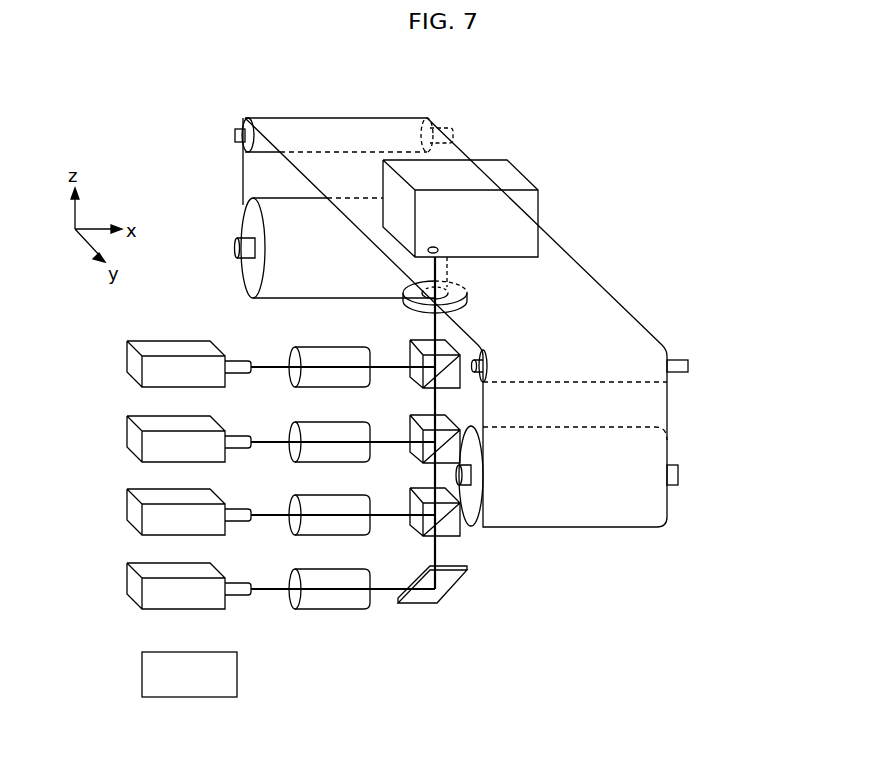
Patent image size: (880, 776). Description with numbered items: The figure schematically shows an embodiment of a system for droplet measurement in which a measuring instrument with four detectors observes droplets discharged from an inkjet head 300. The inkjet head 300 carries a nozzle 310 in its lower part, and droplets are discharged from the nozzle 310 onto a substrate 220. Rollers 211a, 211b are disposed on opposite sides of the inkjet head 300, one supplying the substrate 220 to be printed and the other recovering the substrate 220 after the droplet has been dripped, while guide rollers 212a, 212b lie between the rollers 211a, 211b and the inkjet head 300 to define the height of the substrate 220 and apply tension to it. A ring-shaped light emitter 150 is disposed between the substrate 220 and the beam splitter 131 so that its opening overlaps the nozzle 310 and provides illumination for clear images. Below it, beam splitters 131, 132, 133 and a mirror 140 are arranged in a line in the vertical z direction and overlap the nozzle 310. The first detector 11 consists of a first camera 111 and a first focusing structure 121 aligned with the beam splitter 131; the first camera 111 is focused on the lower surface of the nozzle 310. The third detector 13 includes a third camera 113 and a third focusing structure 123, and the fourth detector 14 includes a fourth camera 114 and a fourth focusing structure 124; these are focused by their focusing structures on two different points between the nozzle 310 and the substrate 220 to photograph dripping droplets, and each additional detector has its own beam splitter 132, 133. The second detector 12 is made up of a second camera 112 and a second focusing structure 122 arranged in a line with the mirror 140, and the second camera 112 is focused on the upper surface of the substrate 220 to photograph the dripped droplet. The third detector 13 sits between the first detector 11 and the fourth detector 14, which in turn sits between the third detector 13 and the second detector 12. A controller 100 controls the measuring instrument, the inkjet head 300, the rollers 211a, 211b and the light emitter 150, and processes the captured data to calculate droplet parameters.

The controller 100 is at (142, 672).
The first detector 11 is at (224, 504).
The second detector 12 is at (252, 618).
The third detector 13 is at (291, 545).
The fourth detector 14 is at (330, 582).
The first camera 111 is at (142, 362).
The second camera 112 is at (142, 584).
The third camera 113 is at (142, 437).
The fourth camera 114 is at (142, 510).
The first focusing structure 121 is at (313, 355).
The second focusing structure 122 is at (305, 572).
The third focusing structure 123 is at (305, 425).
The fourth focusing structure 124 is at (305, 498).
The beam splitter 131 is at (411, 352).
The beam splitter 132 is at (411, 427).
The beam splitter 133 is at (411, 500).
The mirror 140 is at (425, 577).
The light emitter 150 is at (404, 301).
The roller 211a is at (235, 248).
The roller 211b is at (680, 475).
The guide roller 212a is at (235, 136).
The guide roller 212b is at (690, 366).
The substrate 220 is at (590, 288).
The inkjet head 300 is at (497, 162).
The nozzle 310 is at (438, 250).